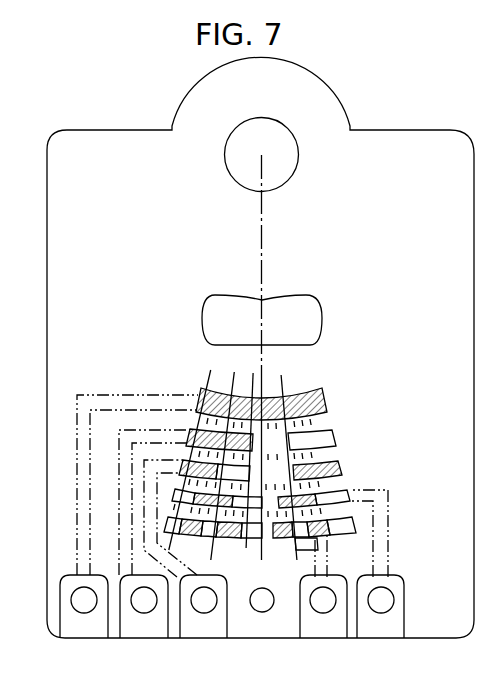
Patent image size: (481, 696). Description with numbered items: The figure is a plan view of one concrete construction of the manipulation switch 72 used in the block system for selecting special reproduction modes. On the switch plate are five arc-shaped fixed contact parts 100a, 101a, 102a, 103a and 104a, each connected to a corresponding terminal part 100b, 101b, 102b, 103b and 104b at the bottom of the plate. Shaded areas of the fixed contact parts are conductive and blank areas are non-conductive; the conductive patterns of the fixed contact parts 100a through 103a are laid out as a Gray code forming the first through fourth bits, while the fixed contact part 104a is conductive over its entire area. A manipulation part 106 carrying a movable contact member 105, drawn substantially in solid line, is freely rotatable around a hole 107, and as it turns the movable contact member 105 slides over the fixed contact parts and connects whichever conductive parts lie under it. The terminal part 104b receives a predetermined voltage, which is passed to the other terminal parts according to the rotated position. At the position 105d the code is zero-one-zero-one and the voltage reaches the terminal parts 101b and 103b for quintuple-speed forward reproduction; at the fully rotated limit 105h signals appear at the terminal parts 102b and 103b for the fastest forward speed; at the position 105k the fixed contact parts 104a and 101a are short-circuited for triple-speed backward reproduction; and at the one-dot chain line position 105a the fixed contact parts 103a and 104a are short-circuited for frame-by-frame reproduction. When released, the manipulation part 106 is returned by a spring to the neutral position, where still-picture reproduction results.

The manipulation switch 72 is at (408, 110).
The hole 107 is at (238, 132).
The manipulation part 106 is at (266, 250).
The movable contact member 105 is at (262, 385).
The rotated position of movable contact member (one-dot chain line) 105a is at (247, 549).
The rotated position of movable contact member 105d is at (235, 381).
The rotated position of movable contact member (fully rotated limit) 105h is at (196, 421).
The rotated position of movable contact member 105k is at (316, 546).
The fixed contact part 104a is at (325, 399).
The fixed contact part 103a is at (333, 433).
The fixed contact part 102a is at (339, 462).
The fixed contact part 101a is at (349, 490).
The fixed contact part 100a is at (355, 524).
The terminal part 104b is at (88, 632).
The terminal part 103b is at (146, 632).
The terminal part 102b is at (204, 632).
The terminal part 100b is at (326, 632).
The terminal part 101b is at (384, 632).